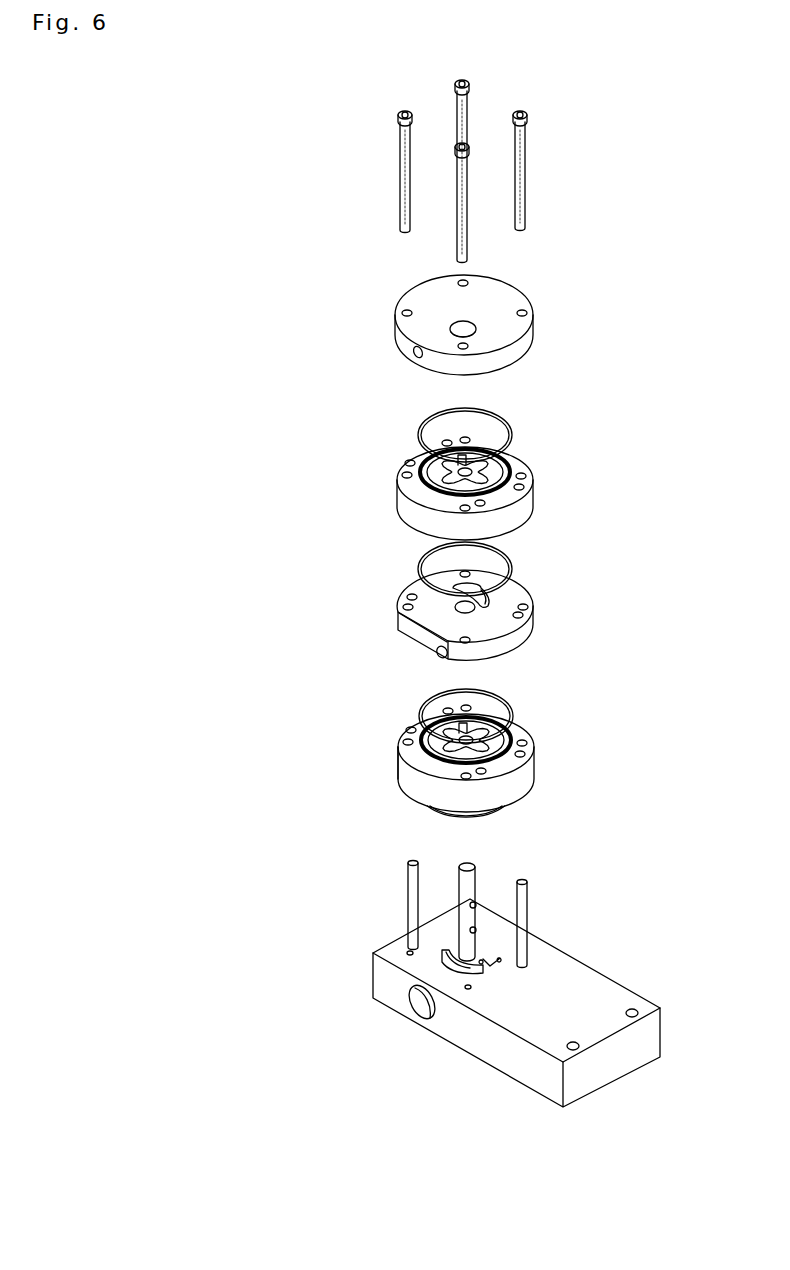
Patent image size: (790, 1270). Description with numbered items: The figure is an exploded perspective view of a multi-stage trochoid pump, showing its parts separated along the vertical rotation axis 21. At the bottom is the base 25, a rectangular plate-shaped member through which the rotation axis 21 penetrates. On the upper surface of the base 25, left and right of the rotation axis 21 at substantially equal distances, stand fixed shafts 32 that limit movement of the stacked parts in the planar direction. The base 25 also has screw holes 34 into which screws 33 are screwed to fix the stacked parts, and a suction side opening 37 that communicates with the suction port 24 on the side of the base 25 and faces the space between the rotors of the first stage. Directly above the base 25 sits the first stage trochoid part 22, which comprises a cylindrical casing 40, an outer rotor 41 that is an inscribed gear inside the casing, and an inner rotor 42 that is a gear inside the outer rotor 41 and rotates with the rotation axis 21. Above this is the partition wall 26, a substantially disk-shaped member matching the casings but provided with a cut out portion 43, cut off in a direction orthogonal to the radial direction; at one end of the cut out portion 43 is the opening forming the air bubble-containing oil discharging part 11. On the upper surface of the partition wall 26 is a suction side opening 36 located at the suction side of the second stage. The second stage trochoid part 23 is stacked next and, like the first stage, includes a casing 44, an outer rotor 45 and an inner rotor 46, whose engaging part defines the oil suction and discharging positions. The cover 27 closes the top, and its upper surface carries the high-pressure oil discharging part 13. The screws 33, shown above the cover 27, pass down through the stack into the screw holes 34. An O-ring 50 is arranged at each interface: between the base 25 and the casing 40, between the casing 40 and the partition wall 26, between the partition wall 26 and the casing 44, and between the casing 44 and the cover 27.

The air bubble-containing oil discharging part 11 is at (437, 651).
The high-pressure oil discharging part 13 is at (450, 323).
The rotation axis 21 is at (470, 888).
The first stage trochoid part 22 is at (528, 780).
The second stage trochoid part 23 is at (527, 507).
The suction port 24 is at (412, 1010).
The base 25 is at (653, 1037).
The partition wall 26 is at (527, 625).
The cover 27 is at (523, 333).
The fixed shafts 32 is at (407, 895).
The screws 33 is at (467, 105).
The screw holes 34 is at (460, 920).
The suction side opening 36 is at (494, 601).
The suction side opening 37 is at (442, 968).
The casing 40 is at (404, 777).
The outer rotor 41 is at (528, 750).
The inner rotor 42 is at (436, 750).
The cut out portion 43 is at (398, 628).
The casing 44 is at (527, 452).
The outer rotor 45 is at (420, 476).
The inner rotor 46 is at (503, 463).
The O-ring 50 is at (509, 428).